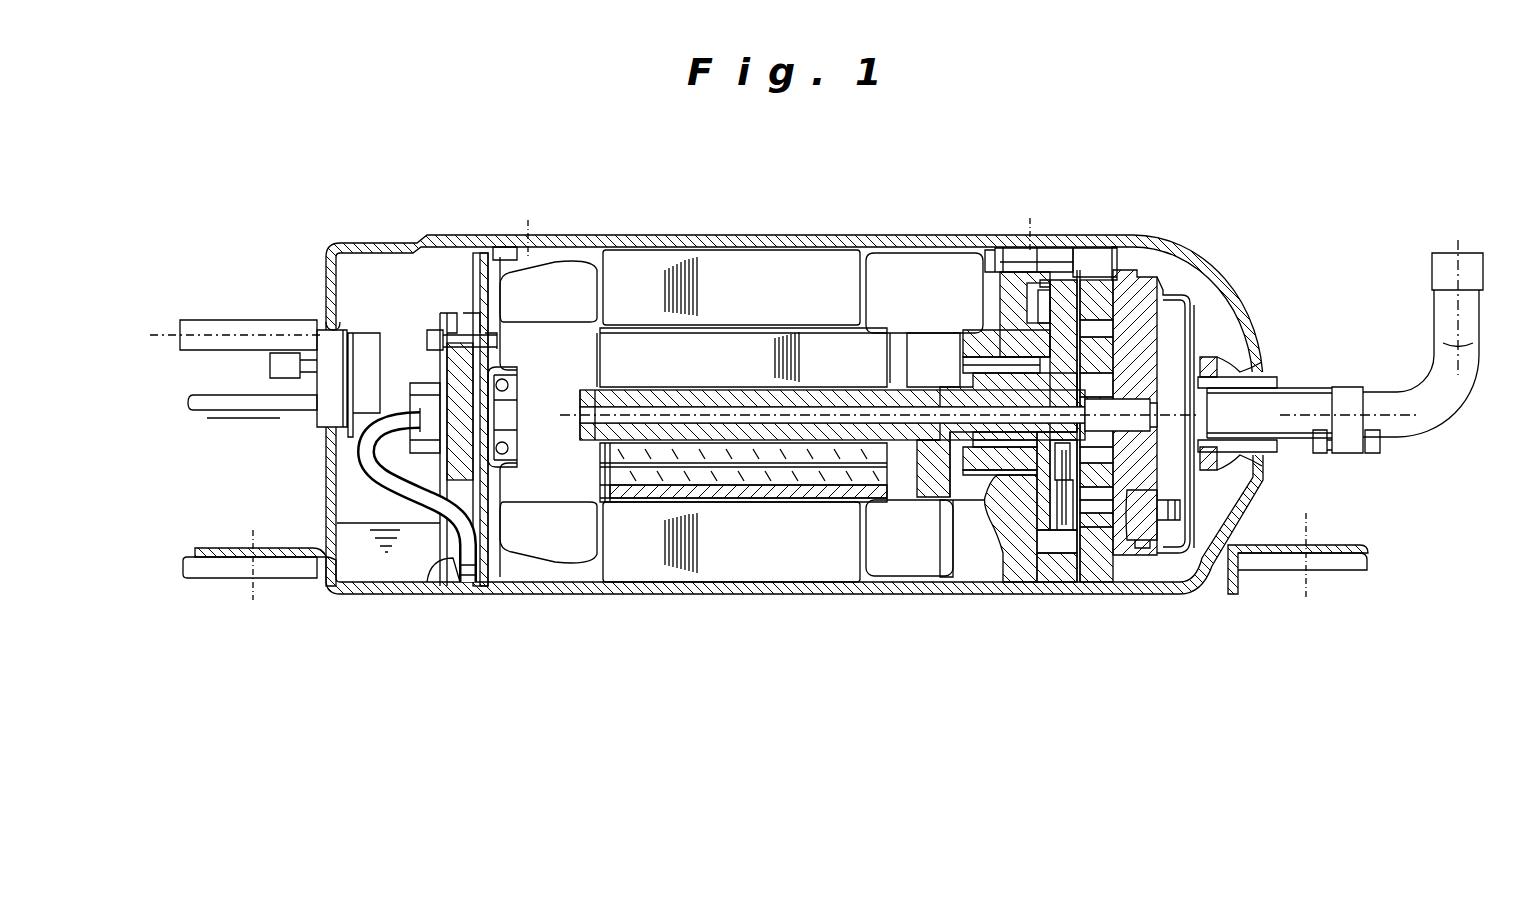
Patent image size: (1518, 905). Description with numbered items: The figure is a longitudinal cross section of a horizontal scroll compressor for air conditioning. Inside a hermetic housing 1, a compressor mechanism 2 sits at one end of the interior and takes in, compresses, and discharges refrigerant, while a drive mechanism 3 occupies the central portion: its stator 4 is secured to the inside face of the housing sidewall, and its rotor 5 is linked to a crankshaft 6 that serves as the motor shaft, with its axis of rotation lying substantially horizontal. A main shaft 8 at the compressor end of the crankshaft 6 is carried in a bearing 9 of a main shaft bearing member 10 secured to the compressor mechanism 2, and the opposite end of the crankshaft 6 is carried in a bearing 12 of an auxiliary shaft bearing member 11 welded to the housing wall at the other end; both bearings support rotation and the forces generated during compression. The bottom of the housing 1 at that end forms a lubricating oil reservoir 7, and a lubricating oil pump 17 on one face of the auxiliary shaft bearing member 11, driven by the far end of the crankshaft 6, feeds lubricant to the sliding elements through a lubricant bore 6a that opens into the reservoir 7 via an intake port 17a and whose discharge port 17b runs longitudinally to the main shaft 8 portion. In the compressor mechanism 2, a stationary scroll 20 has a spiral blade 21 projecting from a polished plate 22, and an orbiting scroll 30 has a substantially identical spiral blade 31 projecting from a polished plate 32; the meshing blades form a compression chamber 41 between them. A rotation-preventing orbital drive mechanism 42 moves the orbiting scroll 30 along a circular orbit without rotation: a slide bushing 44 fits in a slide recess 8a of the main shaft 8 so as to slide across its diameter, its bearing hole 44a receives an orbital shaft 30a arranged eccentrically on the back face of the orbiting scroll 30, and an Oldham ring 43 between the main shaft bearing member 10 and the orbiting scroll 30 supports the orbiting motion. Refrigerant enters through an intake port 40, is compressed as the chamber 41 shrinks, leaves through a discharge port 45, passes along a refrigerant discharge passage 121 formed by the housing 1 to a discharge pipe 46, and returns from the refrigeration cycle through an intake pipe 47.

The hermetic housing 1 is at (763, 238).
The compressor mechanism 2 is at (1130, 276).
The drive mechanism 3 is at (768, 560).
The stator 4 is at (813, 563).
The rotor 5 is at (733, 487).
The crankshaft 6 is at (726, 390).
The lubricant bore 6a is at (657, 405).
The lubricating oil reservoir 7 is at (450, 560).
The main shaft 8 is at (967, 340).
The slide recess 8a is at (1000, 475).
The bearing 9 is at (1006, 560).
The main shaft bearing member 10 is at (1050, 540).
The auxiliary shaft bearing member 11 is at (480, 290).
The bearing 12 is at (506, 455).
The lubricating oil pump 17 is at (437, 455).
The intake port 17a is at (470, 588).
The discharge port 17b is at (418, 398).
The stationary scroll 20 is at (1140, 295).
The spiral blade 21 is at (1090, 310).
The polished plate 22 is at (1198, 290).
The orbiting scroll 30 is at (1020, 338).
The orbital shaft 30a is at (905, 480).
The blade 31 is at (1220, 272).
The polished plate 32 is at (1063, 320).
The intake port 40 is at (1141, 514).
The compression chamber 41 is at (1160, 377).
The rotation-preventing orbital drive mechanism 42 is at (1082, 590).
The Oldham ring 43 is at (1050, 300).
The slide bushing 44 is at (960, 500).
The bearing hole 44a is at (927, 388).
The discharge port 45 is at (1205, 420).
The discharge pipe 46 is at (266, 327).
The intake pipe 47 is at (1440, 420).
The refrigerant discharge passage 121 is at (383, 282).